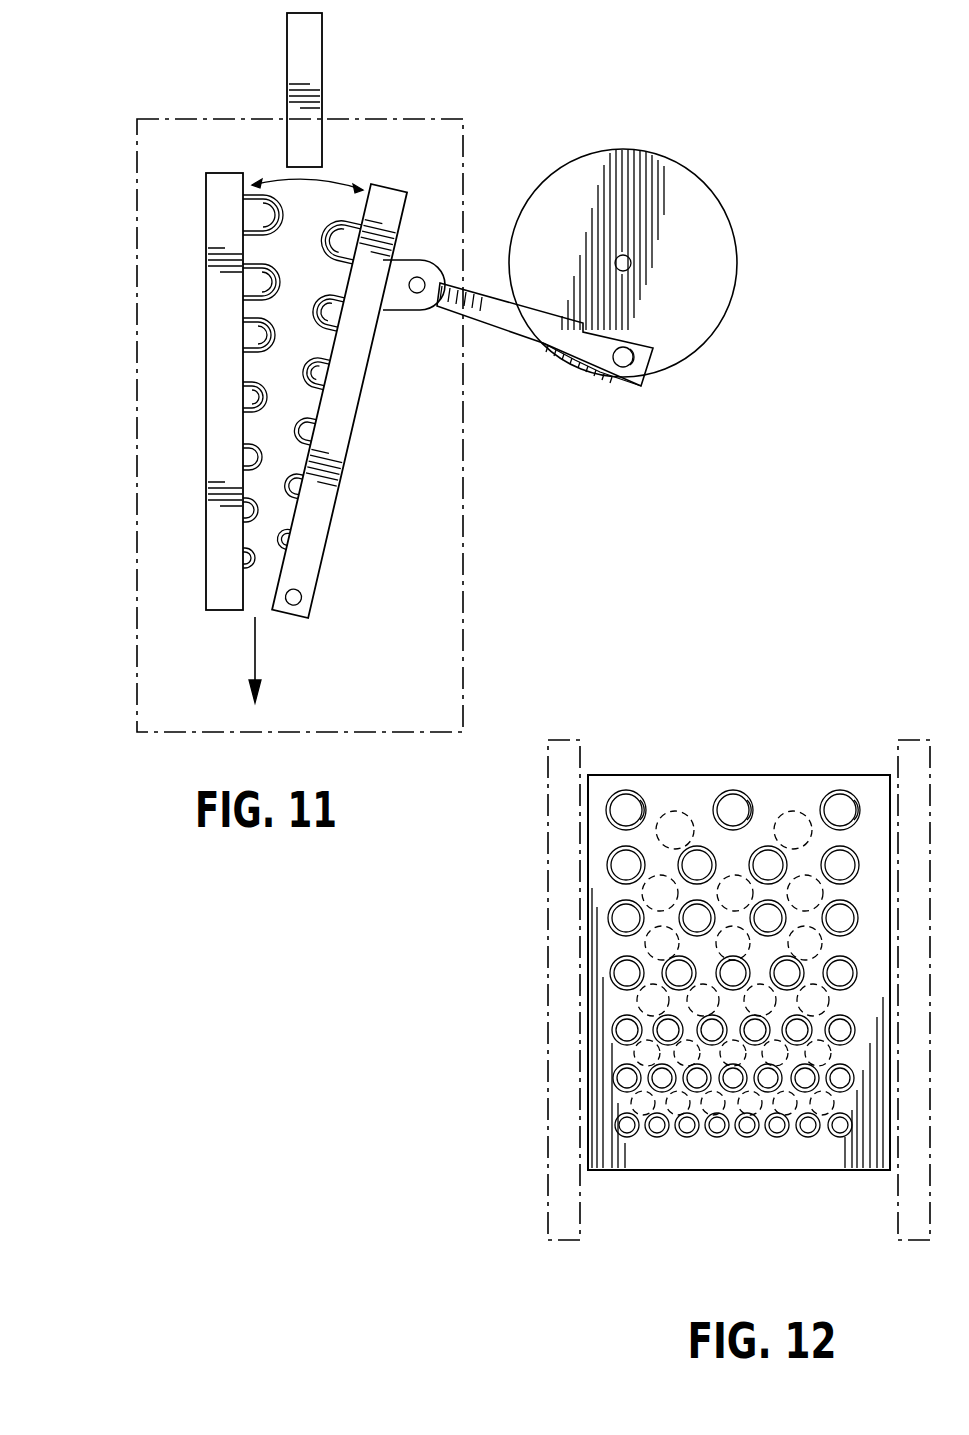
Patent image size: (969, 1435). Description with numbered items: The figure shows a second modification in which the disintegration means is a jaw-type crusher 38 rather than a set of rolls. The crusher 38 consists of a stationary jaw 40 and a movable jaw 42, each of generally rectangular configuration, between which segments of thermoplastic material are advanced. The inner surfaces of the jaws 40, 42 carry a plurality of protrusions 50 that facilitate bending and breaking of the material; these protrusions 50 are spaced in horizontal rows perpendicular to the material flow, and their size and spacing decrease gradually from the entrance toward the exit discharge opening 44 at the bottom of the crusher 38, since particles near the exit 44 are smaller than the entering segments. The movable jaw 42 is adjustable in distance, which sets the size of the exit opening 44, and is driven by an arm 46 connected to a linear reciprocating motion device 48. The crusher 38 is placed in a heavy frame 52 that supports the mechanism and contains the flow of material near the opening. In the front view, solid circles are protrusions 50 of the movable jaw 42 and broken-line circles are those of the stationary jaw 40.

In FIG. 11, the jaw-type crusher 38 is at (333, 182).
In FIG. 11, the stationary jaw 40 is at (174, 329).
In FIG. 12, the stationary jaw 40 is at (739, 917).
In FIG. 11, the movable jaw 42 is at (365, 375).
In FIG. 11, the exit discharge opening 44 is at (263, 612).
In FIG. 11, the arm 46 is at (513, 318).
In FIG. 11, the reciprocating motion device 48 is at (712, 208).
In FIG. 11, the protrusions 50 is at (255, 217).
In FIG. 12, the protrusions 50 is at (630, 795).
In FIG. 12, the heavy frame 52 is at (915, 740).